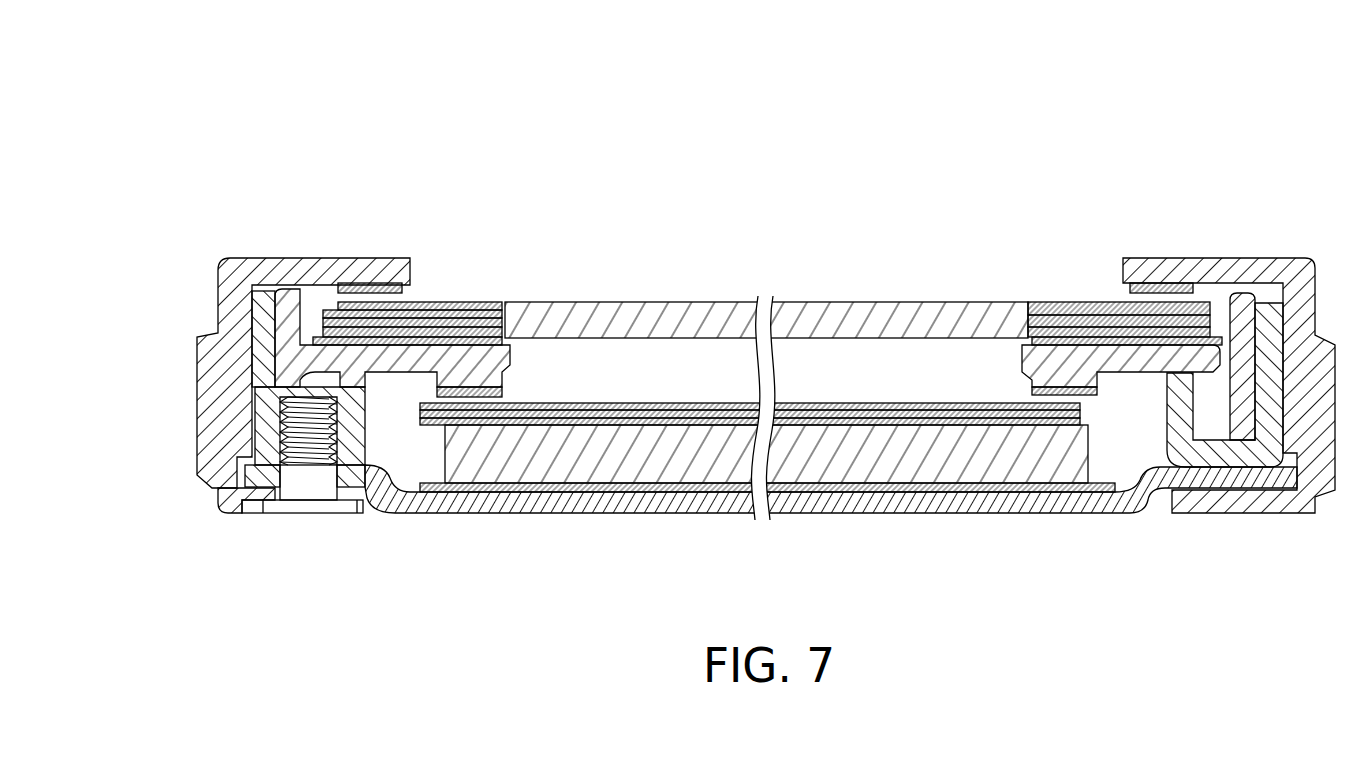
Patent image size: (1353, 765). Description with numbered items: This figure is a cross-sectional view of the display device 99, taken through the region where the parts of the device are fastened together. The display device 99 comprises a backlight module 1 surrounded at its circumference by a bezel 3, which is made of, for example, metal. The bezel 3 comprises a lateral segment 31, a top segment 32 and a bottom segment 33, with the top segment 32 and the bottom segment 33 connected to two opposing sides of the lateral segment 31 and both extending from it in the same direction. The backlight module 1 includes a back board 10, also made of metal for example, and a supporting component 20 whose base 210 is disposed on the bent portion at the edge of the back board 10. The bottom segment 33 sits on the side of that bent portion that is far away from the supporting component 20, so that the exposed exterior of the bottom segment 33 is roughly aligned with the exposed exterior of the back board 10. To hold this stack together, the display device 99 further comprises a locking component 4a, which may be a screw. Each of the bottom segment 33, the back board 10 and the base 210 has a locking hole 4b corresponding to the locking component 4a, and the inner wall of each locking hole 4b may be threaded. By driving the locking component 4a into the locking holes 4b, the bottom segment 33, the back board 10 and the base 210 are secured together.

The display device 99 is at (255, 83).
The bezel 3 is at (93, 208).
The lateral segment 31 is at (213, 394).
The top segment 32 is at (283, 268).
The bottom segment 33 is at (233, 507).
The backlight module 1 is at (490, 538).
The back board 10 is at (612, 514).
The supporting component 20 is at (380, 450).
The base 210 is at (355, 515).
The locking component 4a is at (305, 515).
The locking hole 4b is at (273, 432).